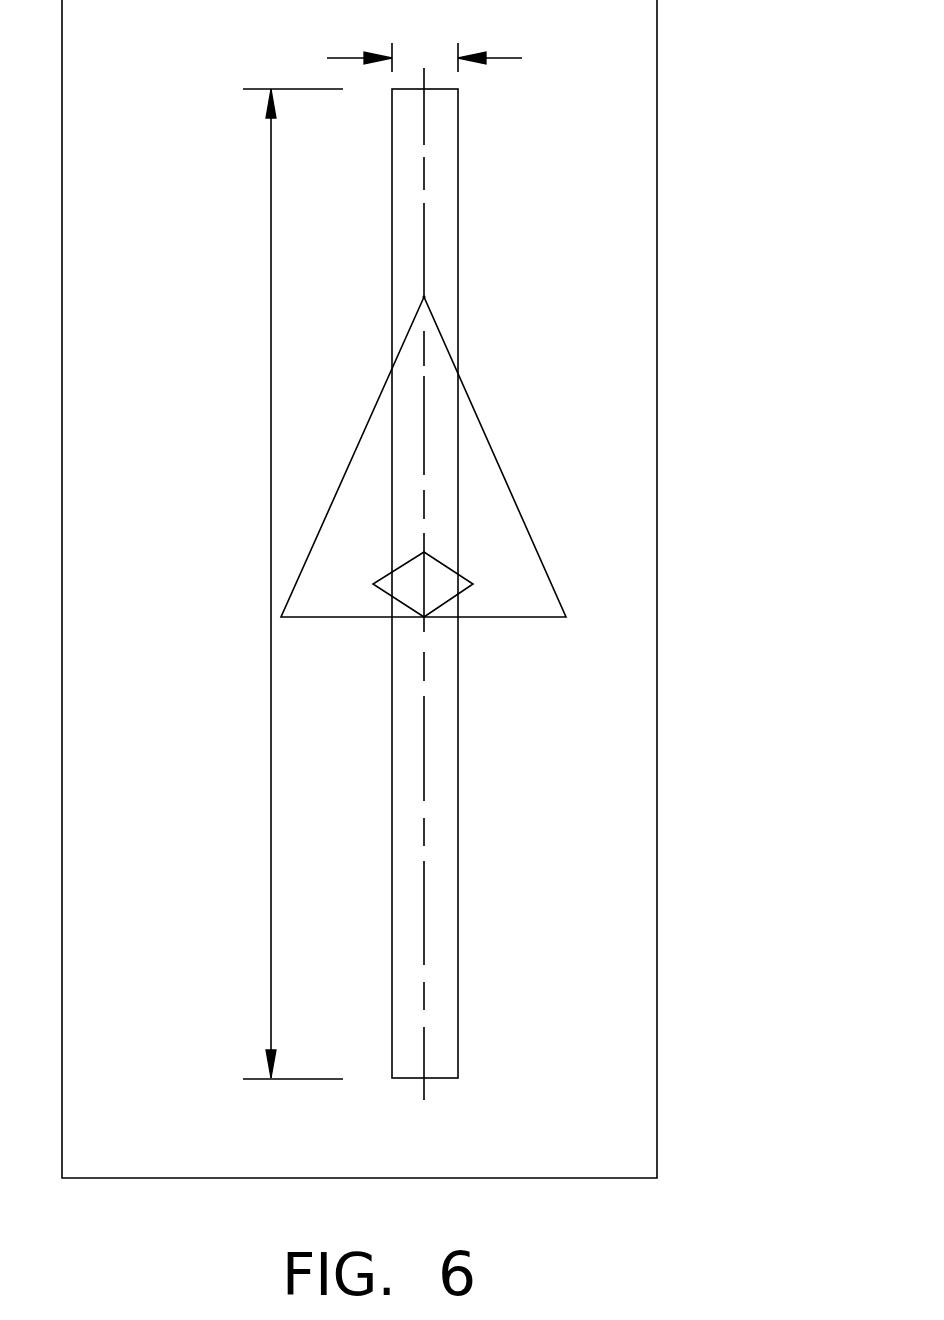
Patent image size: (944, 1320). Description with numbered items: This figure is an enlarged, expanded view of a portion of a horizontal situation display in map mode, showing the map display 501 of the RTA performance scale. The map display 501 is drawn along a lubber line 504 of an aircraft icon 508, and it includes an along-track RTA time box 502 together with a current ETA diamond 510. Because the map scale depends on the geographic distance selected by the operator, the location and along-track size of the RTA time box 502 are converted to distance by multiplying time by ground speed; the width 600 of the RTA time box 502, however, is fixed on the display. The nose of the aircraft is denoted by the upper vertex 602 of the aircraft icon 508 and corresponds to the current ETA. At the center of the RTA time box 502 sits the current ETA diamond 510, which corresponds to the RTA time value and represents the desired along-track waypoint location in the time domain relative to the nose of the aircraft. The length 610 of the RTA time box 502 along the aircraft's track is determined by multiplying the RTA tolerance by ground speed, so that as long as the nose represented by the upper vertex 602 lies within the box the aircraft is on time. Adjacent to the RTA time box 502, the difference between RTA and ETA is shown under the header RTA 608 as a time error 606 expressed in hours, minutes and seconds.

The map display 501 is at (730, 232).
The RTA time box 502 is at (458, 339).
The lubber line 504 is at (424, 222).
The aircraft icon 508 is at (490, 505).
The current ETA diamond 510 is at (435, 585).
The width 600 is at (345, 58).
The upper vertex 602 is at (424, 297).
The time error 606 is at (188, 612).
The RTA header 608 is at (187, 580).
The length 610 is at (271, 893).